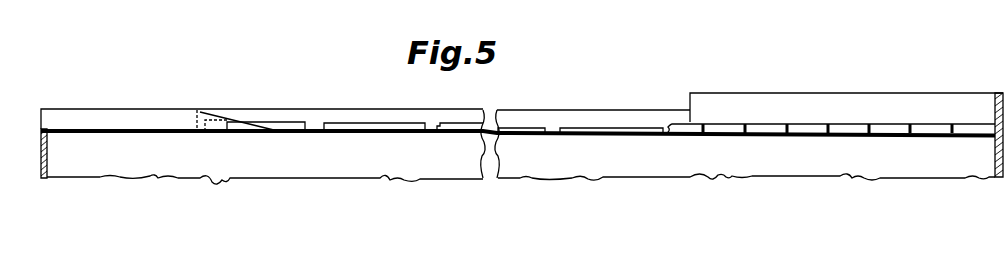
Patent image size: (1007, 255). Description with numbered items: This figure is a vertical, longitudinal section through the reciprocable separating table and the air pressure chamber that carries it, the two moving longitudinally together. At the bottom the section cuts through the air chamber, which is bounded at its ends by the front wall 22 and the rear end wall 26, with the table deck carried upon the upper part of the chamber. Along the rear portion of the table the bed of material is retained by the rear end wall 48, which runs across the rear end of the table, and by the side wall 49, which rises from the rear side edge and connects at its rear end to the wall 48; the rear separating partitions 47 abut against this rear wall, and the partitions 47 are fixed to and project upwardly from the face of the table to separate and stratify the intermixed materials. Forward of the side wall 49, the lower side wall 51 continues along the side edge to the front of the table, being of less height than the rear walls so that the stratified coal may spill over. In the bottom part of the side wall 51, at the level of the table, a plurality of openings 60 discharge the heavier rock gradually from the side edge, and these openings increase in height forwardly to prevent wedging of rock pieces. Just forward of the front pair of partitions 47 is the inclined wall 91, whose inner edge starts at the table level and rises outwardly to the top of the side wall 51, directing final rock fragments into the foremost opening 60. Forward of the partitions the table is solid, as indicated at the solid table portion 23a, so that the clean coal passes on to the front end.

The front wall 22 is at (47, 158).
The solid table portion 23a is at (80, 129).
The rear end wall 26 is at (995, 157).
The separating partitions 47 is at (862, 132).
The rear end wall of table 48 is at (994, 110).
The side wall 49 is at (779, 80).
The side wall 51 is at (158, 113).
The openings 60 is at (275, 122).
The inclined wall 91 is at (226, 122).